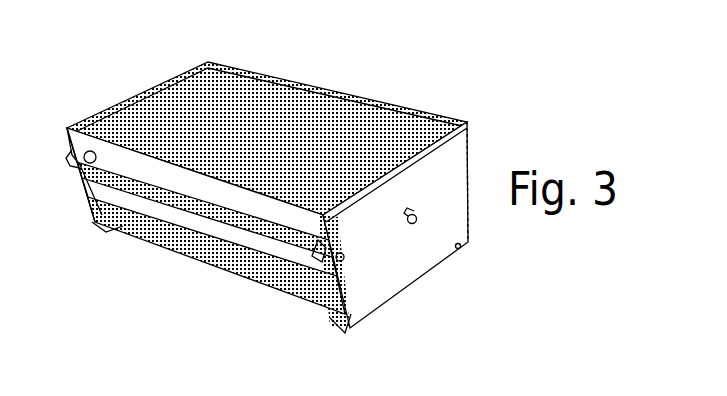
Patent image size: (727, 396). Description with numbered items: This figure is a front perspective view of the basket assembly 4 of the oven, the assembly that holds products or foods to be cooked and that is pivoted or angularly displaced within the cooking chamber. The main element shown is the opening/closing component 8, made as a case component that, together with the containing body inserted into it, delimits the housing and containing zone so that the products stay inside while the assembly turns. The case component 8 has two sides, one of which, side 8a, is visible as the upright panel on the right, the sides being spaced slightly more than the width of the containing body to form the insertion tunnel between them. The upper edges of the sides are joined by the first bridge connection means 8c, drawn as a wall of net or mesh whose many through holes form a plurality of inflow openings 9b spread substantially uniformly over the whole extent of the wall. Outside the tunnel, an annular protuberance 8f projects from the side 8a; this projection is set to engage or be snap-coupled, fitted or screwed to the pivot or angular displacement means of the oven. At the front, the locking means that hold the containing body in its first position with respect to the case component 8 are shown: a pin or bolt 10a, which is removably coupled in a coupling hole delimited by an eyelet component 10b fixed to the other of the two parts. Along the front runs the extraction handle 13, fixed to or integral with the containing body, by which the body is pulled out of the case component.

The basket assembly 4 is at (284, 107).
The opening/closing component 8 is at (337, 237).
The side 8a is at (442, 172).
The first bridge connection means 8c is at (152, 128).
The protuberance 8f is at (413, 224).
The inflow openings 9b is at (327, 100).
The pin or bolt 10a is at (90, 178).
The eyelet component 10b is at (343, 261).
The extraction handle 13 is at (210, 220).